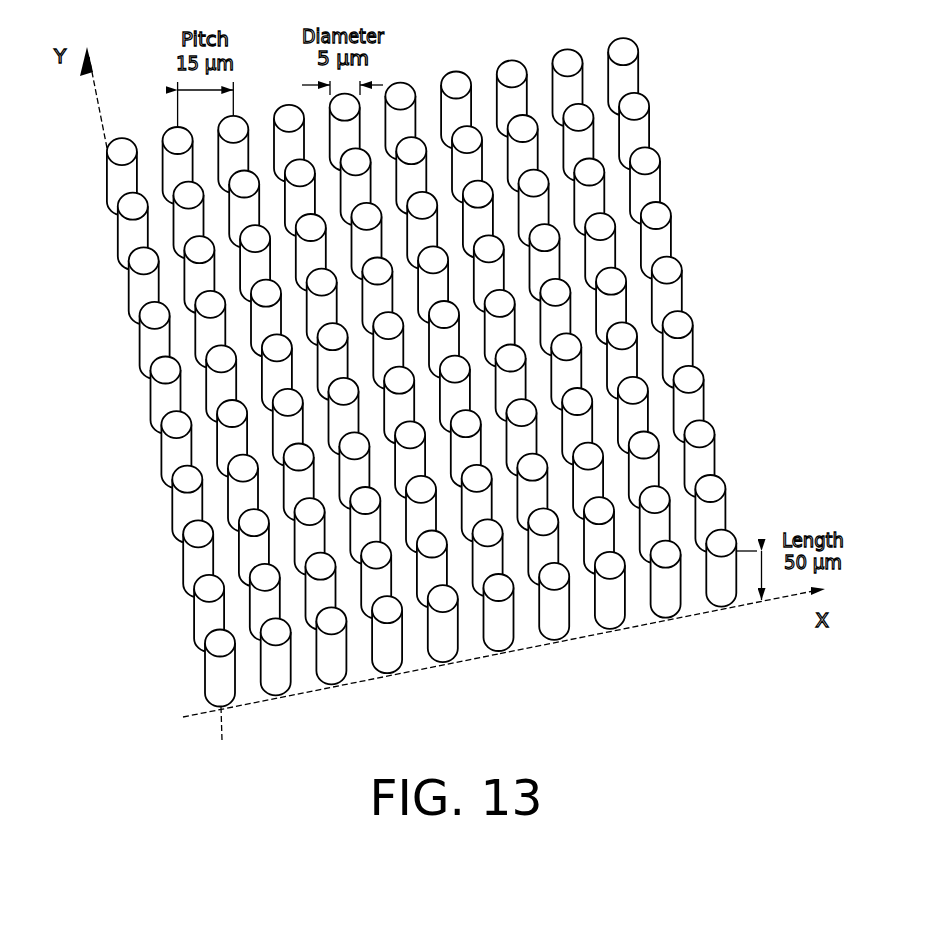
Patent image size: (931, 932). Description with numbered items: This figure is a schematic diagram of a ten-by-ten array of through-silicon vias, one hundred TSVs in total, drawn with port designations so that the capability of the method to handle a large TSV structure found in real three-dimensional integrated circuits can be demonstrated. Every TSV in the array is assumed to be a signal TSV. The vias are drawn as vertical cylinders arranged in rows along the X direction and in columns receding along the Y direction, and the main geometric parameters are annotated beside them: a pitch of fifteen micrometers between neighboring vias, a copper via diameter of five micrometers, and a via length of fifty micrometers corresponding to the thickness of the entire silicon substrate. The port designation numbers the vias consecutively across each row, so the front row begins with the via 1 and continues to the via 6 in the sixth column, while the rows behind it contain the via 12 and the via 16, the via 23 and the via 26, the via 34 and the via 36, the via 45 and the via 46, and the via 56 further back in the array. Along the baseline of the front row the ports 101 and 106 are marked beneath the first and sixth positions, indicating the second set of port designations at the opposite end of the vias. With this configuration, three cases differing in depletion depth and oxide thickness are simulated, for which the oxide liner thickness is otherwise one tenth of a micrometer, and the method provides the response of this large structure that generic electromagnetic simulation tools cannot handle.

The pillar 1 is at (220, 668).
The pillar 6 is at (499, 612).
The pillar 12 is at (265, 602).
The pillar 16 is at (488, 557).
The pillar 23 is at (310, 536).
The pillar 26 is at (477, 503).
The pillar 34 is at (354, 470).
The pillar 36 is at (466, 448).
The pillar 45 is at (399, 405).
The pillar 46 is at (455, 394).
The pillar 56 is at (444, 339).
The first position on X axis 101 is at (230, 706).
The sixth position on X axis 106 is at (510, 648).